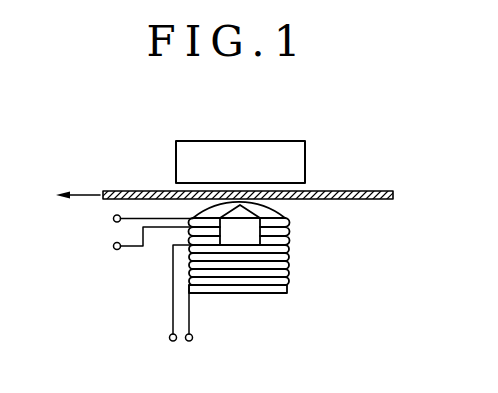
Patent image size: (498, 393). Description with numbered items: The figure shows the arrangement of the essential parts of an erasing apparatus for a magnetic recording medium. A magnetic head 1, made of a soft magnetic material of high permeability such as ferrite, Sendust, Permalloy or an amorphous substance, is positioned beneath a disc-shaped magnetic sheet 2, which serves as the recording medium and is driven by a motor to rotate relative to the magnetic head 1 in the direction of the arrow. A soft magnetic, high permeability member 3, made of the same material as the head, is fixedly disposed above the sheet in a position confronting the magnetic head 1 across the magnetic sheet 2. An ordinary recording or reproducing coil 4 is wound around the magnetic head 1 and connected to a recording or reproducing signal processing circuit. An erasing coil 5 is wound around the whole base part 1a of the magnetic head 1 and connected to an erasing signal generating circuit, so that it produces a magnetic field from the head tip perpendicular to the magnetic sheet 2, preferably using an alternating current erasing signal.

The magnetic head 1 is at (270, 210).
The base part 1a is at (262, 288).
The magnetic sheet 2 is at (355, 191).
The high permeability member 3 is at (284, 147).
The recording or reproducing coil 4 is at (268, 235).
The erasing coil 5 is at (222, 273).